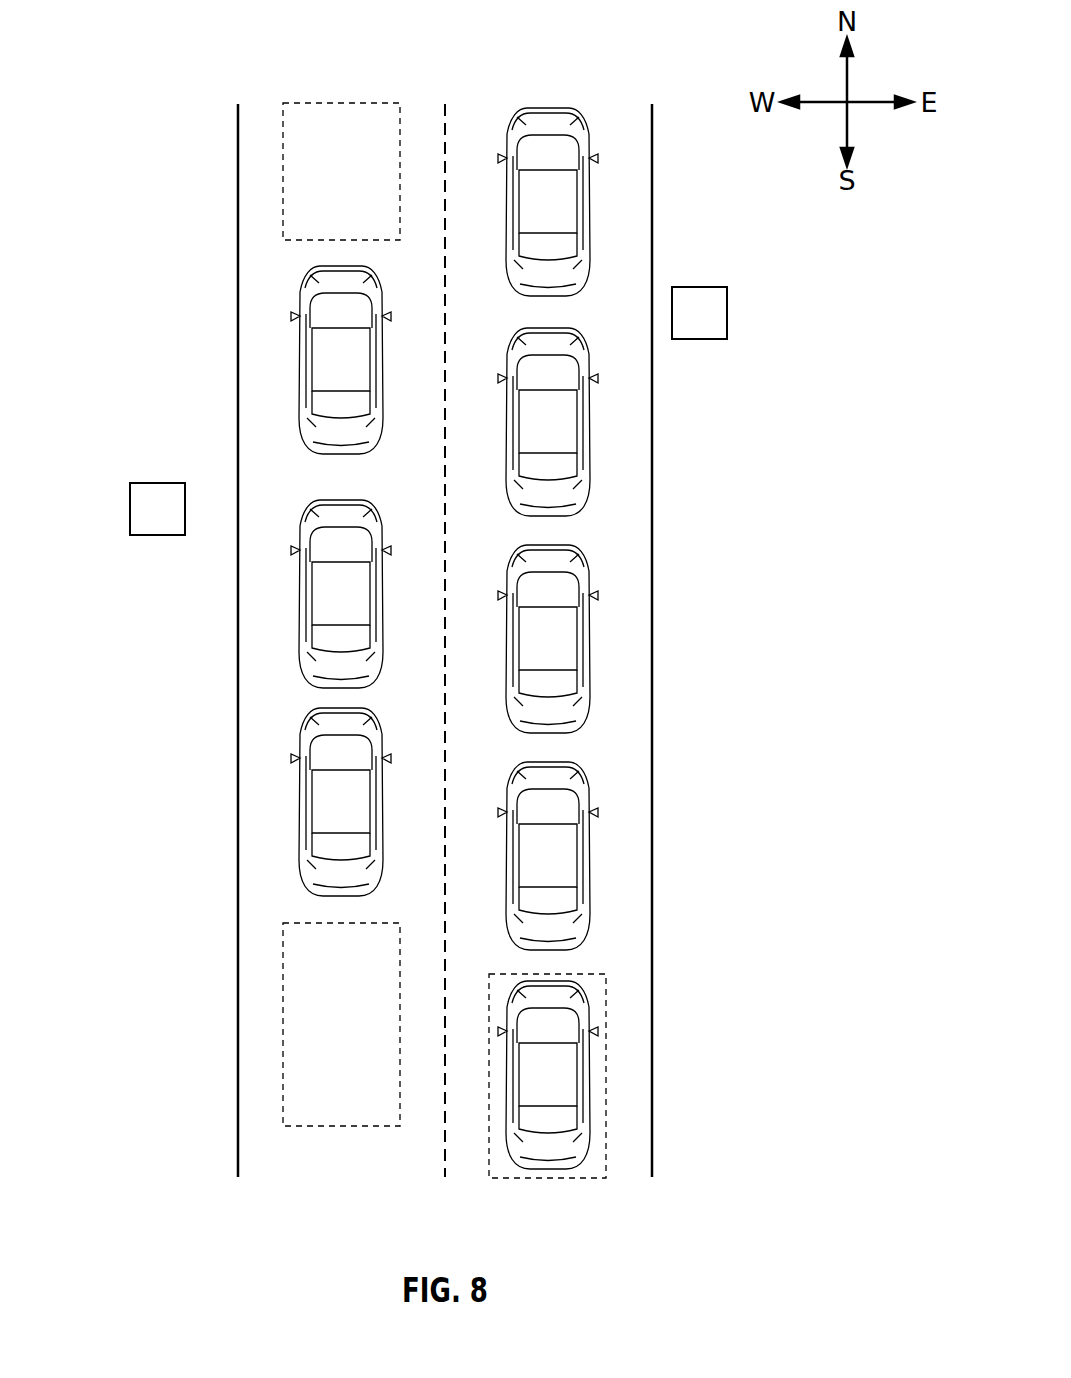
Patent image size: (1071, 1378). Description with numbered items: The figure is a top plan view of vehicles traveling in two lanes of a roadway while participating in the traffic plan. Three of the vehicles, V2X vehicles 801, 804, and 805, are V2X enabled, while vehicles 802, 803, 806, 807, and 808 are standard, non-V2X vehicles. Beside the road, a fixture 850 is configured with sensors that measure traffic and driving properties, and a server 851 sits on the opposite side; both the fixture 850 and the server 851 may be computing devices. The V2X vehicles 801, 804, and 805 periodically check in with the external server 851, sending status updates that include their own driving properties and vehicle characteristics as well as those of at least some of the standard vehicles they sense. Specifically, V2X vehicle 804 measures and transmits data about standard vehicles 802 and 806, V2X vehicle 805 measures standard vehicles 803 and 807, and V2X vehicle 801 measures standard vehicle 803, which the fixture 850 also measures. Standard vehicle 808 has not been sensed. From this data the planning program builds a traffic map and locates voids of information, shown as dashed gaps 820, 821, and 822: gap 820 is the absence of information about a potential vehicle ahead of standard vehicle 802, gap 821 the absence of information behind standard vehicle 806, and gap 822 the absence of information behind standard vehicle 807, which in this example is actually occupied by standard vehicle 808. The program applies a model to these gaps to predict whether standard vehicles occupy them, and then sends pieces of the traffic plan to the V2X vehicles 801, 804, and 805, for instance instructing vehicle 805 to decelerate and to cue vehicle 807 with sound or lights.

The V2X vehicle 801 is at (591, 208).
The standard vehicle 802 is at (300, 375).
The standard vehicle 803 is at (590, 427).
The V2X vehicle 804 is at (302, 587).
The V2X vehicle 805 is at (590, 649).
The standard vehicle 806 is at (302, 822).
The standard vehicle 807 is at (588, 863).
The standard vehicle 808 is at (588, 1076).
The gap 820 is at (335, 102).
The gap 821 is at (337, 1127).
The gap 822 is at (542, 1178).
The fixture 850 is at (727, 312).
The server 851 is at (129, 509).